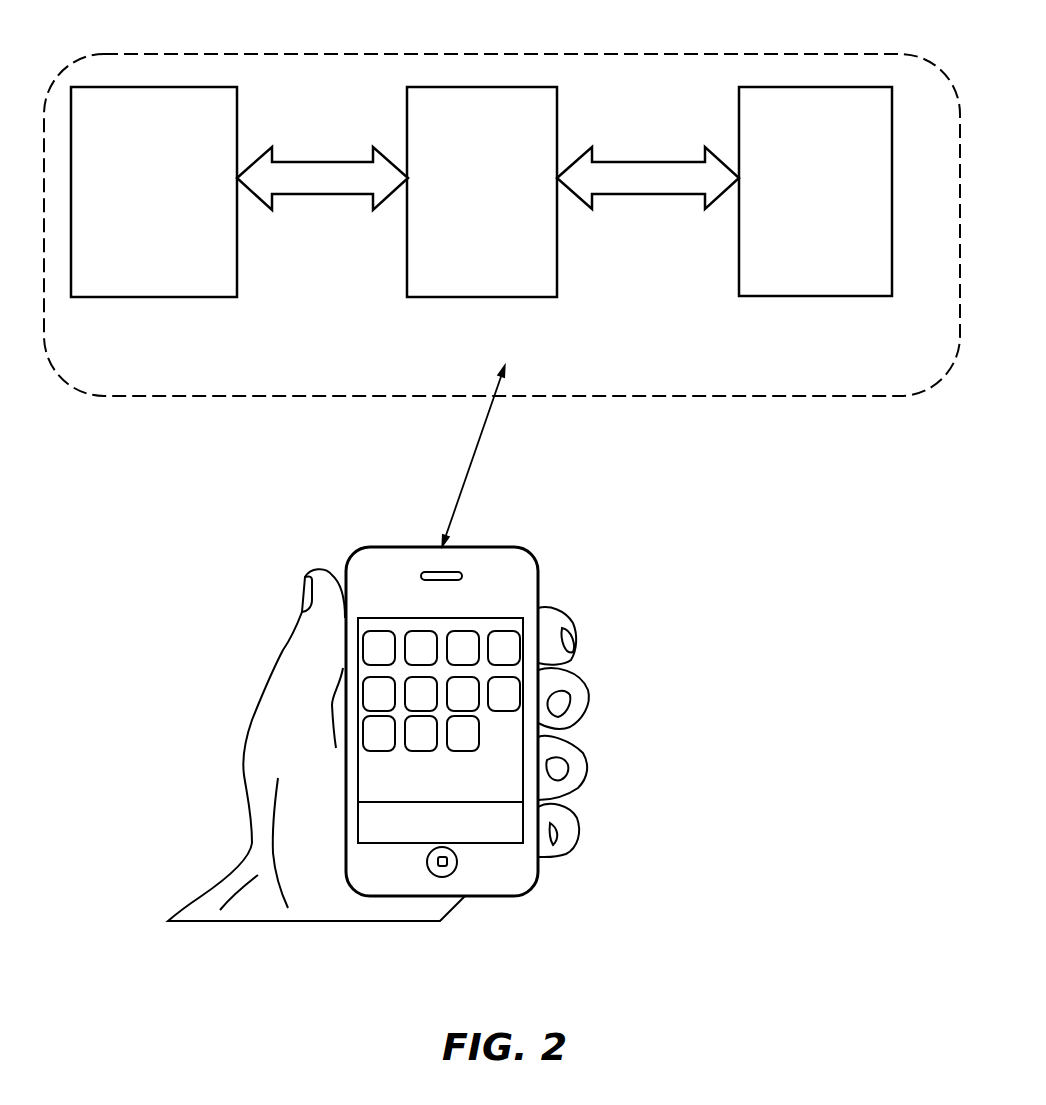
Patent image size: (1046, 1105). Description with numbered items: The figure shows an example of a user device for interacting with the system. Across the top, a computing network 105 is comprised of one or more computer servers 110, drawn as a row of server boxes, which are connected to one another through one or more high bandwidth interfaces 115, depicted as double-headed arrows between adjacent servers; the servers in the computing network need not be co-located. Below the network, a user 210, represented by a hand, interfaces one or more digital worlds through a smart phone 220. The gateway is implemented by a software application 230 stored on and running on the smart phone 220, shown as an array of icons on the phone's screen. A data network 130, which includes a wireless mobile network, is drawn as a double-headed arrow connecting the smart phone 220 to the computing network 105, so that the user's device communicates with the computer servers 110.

The computing network 105 is at (290, 54).
The computer servers 110 is at (128, 227).
The high bandwidth interfaces 115 is at (353, 180).
The data network 130 is at (466, 471).
The user 210 is at (573, 680).
The smart phone 220 is at (537, 877).
The software application 230 is at (373, 693).